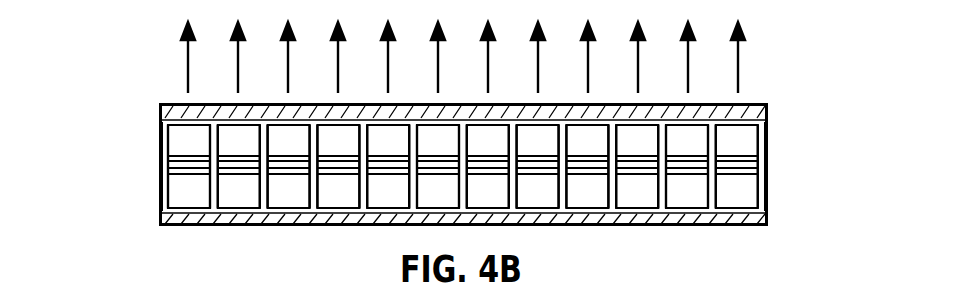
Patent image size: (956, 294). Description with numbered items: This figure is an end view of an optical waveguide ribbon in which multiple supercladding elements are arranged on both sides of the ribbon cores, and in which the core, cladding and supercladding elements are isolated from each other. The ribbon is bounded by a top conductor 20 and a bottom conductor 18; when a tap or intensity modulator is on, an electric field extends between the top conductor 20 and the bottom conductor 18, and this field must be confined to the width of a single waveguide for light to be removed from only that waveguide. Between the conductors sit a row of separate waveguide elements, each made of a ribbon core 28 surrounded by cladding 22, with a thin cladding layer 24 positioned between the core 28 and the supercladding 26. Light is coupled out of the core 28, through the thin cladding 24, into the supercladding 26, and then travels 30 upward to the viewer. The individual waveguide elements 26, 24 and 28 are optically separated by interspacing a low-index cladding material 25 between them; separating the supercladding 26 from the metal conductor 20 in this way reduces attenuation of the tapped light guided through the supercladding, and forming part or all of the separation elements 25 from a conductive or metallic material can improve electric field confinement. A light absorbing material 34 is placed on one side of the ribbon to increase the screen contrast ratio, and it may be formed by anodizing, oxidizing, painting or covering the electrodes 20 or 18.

The bottom conductor 18 is at (152, 220).
The top conductor 20 is at (772, 113).
The cladding 22 is at (165, 137).
The thin cladding layer 24 is at (762, 156).
The low-index cladding material 25 is at (215, 187).
The supercladding 26 is at (748, 143).
The ribbon core 28 is at (173, 167).
The light travel direction 30 is at (175, 60).
The light absorbing material 34 is at (157, 104).